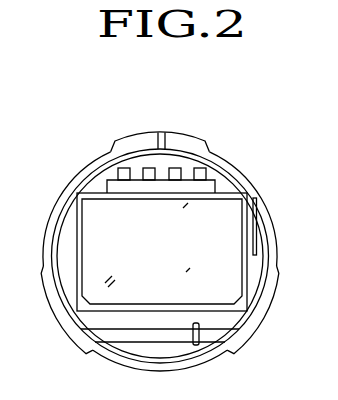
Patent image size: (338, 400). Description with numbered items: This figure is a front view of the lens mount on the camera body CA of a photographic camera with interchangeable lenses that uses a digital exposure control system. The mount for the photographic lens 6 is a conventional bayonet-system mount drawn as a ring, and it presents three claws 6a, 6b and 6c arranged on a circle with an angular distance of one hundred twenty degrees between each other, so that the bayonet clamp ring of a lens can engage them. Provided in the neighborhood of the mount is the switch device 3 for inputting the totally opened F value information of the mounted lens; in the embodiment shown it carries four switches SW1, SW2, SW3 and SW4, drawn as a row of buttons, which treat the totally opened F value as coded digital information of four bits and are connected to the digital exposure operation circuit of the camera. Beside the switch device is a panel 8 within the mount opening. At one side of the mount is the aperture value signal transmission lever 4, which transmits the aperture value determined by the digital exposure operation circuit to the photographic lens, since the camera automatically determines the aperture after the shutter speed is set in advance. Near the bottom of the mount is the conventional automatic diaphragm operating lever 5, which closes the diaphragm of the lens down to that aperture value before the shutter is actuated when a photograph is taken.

The camera body CA is at (86, 151).
The mount for the photographic lens 6 is at (159, 251).
The claw 6a is at (206, 151).
The claw 6b is at (260, 312).
The claw 6c is at (60, 312).
The switch device for the totally opened F value information input 3 is at (142, 193).
The display panel 8 is at (92, 247).
The aperture value signal transmission lever 4 is at (243, 224).
The automatic diaphragm operating lever 5 is at (197, 346).
The switch SW1 is at (122, 166).
The switch SW2 is at (149, 166).
The switch SW3 is at (176, 166).
The switch SW4 is at (201, 166).